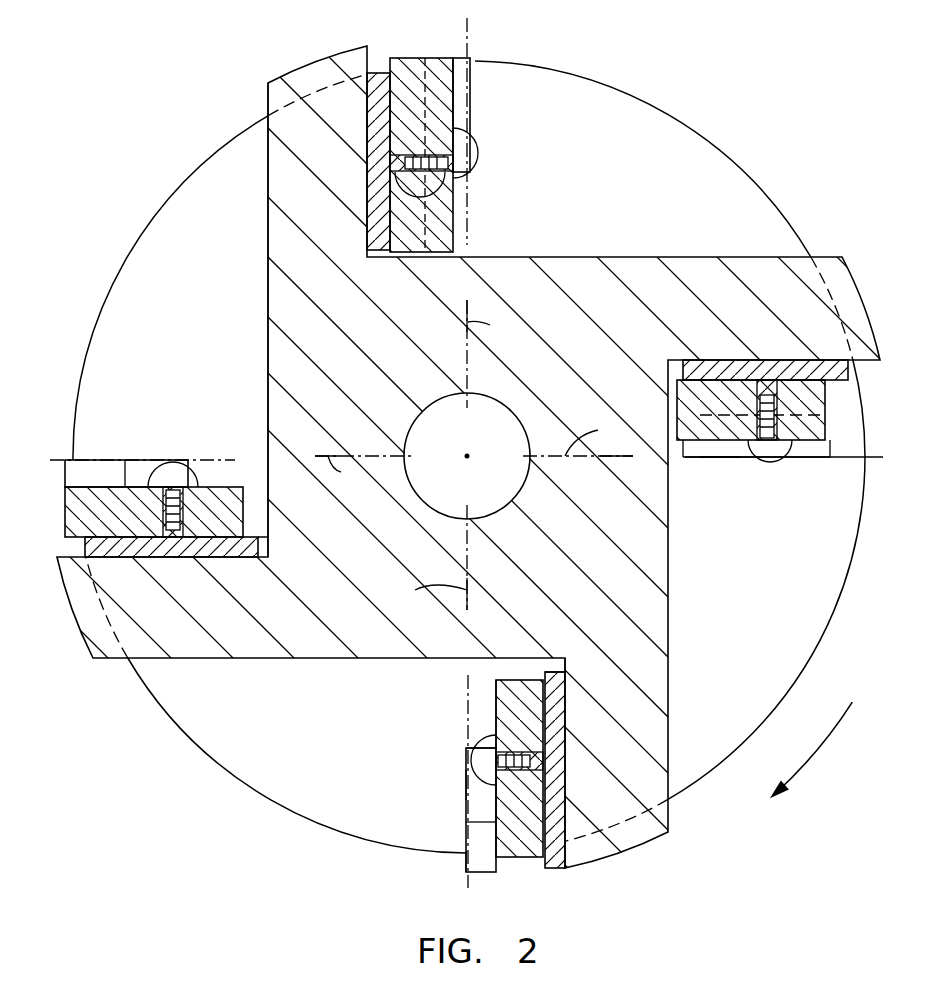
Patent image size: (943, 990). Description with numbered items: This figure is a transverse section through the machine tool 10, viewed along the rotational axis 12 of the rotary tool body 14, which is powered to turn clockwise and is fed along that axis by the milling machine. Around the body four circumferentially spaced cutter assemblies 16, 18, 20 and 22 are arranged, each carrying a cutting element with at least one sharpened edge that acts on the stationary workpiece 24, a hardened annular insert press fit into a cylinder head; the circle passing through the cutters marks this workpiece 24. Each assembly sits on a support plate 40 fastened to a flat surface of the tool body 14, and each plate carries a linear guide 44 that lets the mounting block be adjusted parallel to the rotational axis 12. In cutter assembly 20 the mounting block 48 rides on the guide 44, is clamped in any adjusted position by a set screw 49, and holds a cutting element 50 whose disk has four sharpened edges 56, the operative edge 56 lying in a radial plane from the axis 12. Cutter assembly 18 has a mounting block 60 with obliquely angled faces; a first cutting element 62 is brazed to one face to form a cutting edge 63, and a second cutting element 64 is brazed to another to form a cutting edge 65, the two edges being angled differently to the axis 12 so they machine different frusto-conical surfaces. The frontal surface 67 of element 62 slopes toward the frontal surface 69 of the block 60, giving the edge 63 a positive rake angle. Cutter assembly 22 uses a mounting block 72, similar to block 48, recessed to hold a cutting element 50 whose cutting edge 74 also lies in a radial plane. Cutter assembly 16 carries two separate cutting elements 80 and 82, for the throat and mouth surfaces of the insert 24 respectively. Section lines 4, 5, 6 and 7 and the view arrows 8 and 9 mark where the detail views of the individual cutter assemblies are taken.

The machine tool 10 is at (258, 102).
The rotational axis 12 is at (470, 460).
The rotary tool body 14 is at (752, 258).
The cutter assembly 16 is at (171, 445).
The cutter assembly 18 is at (525, 868).
The cutter assembly 20 is at (745, 480).
The cutter assembly 22 is at (410, 50).
The workpiece 24 is at (700, 125).
The support plate 40 is at (372, 135).
The linear guide 44 is at (385, 200).
The mounting block 48 is at (676, 410).
The set screw 49 is at (757, 462).
The cutting element 50 is at (462, 140).
The sharpened edges 56 is at (728, 462).
The mounting block 60 is at (512, 680).
The first cutting element 62 is at (476, 806).
The cutting edge 63 is at (475, 752).
The second cutting element 64 is at (482, 875).
The cutting edge 65 is at (465, 860).
The frontal surface 67 is at (468, 785).
The frontal surface 69 is at (495, 707).
The mounting block 72 is at (445, 200).
The cutting edge 74 is at (473, 108).
The cutting element 80 is at (75, 475).
The cutting element 82 is at (185, 465).
The section line 4- 4 is at (50, 455).
The section line 5- 5 is at (462, 677).
The section line 6- 6 is at (685, 472).
The section line 7- 7 is at (481, 18).
The view arrow 8 is at (147, 432).
The view arrow 9 is at (398, 770).